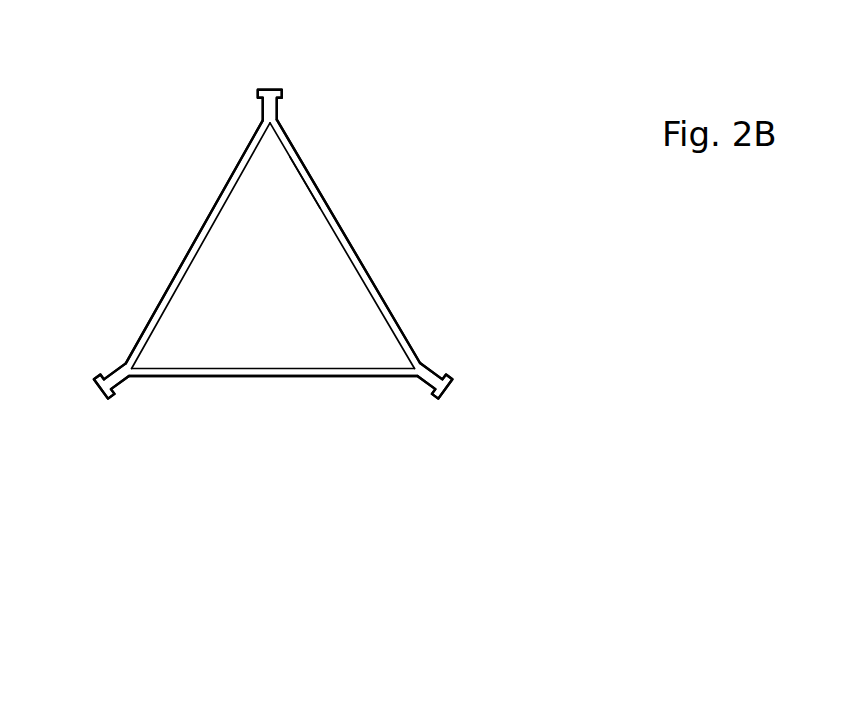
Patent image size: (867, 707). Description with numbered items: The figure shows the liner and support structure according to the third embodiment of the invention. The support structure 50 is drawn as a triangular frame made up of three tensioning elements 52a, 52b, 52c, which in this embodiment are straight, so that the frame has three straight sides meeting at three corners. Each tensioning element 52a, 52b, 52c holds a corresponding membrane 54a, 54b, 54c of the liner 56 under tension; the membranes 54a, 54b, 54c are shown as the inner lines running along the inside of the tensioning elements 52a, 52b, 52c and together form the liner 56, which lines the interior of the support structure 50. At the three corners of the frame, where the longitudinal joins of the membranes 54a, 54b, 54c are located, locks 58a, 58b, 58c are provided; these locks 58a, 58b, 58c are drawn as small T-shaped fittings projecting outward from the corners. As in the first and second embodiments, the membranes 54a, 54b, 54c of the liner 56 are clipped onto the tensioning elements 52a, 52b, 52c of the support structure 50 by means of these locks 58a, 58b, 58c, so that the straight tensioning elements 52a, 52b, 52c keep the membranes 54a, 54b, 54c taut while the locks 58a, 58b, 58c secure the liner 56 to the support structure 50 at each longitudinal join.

The support structure 50 is at (303, 155).
The tensioning element 52a is at (343, 233).
The tensioning element 52b is at (223, 383).
The tensioning element 52c is at (185, 262).
The membrane 54a is at (343, 252).
The membrane 54b is at (186, 369).
The membrane 54c is at (203, 245).
The liner 56 is at (302, 197).
The lock 58a is at (440, 398).
The lock 58b is at (107, 395).
The lock 58c is at (272, 90).